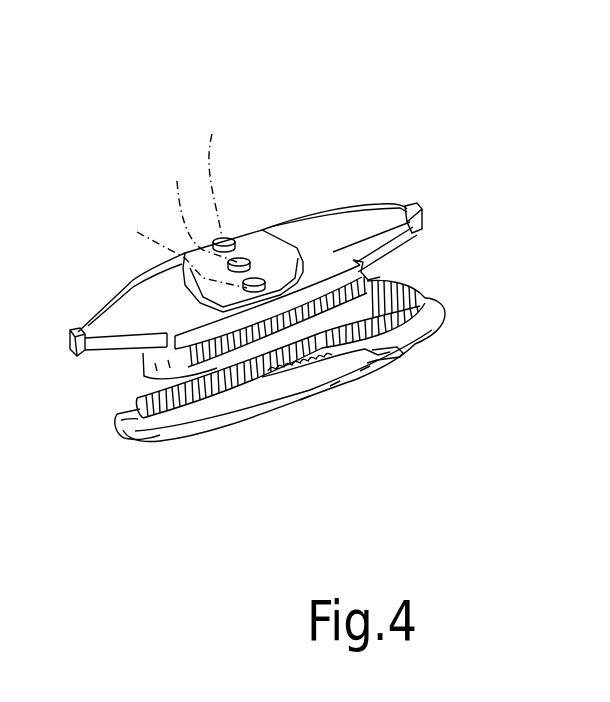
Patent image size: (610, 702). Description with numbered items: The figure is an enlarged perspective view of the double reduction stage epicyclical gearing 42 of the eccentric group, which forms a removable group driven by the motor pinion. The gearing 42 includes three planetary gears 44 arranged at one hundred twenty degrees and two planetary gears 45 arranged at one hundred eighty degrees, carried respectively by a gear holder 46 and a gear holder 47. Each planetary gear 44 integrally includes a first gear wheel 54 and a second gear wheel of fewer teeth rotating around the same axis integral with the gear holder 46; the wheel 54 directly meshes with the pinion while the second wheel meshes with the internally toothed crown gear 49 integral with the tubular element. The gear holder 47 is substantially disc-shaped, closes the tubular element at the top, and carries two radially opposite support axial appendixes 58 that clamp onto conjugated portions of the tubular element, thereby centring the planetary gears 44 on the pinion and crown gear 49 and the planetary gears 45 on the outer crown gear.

The double reduction stage epicyclical gearing 42 is at (265, 209).
The planetary gears 44 is at (433, 289).
The planetary gears 45 is at (240, 381).
The gear holder 46 is at (383, 267).
The gear holder 47 is at (327, 235).
The crown gear 49 is at (317, 387).
The first gear wheel 54 is at (170, 420).
The support axial appendixes 58 is at (79, 331).